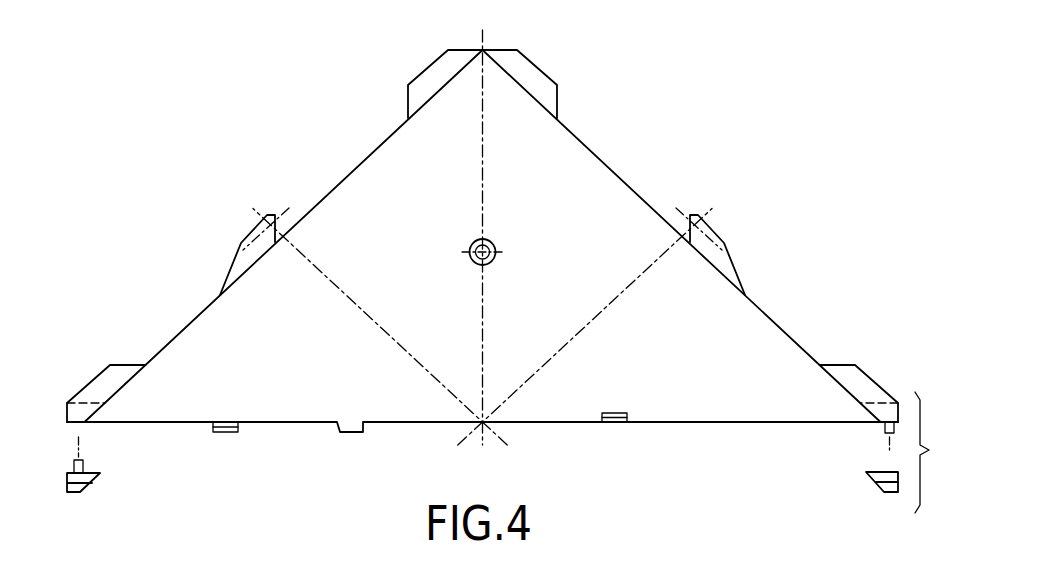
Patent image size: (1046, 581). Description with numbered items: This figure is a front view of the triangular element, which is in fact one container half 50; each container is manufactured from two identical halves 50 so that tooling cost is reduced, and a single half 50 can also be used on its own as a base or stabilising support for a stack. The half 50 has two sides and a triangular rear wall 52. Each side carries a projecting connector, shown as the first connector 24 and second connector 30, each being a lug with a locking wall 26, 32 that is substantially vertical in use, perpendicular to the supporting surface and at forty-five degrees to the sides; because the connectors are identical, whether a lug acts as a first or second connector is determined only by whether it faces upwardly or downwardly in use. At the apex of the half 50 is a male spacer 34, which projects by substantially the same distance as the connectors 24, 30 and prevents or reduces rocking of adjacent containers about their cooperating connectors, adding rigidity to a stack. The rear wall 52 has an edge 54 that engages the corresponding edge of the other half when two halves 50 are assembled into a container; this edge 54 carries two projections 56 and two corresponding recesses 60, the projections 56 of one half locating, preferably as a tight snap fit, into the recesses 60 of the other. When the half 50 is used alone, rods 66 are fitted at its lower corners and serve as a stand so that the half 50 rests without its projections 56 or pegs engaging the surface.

The container half 50 is at (712, 43).
The rear wall 52 is at (545, 231).
The male spacer 34 is at (427, 72).
The locking wall 26 is at (482, 225).
The locking wall 32 is at (682, 212).
The first connector 24 is at (482, 326).
The second connector 30 is at (727, 247).
The edge 54 is at (402, 422).
The projection 56 is at (340, 432).
The recess 60 is at (613, 418).
The rod 66 is at (92, 483).